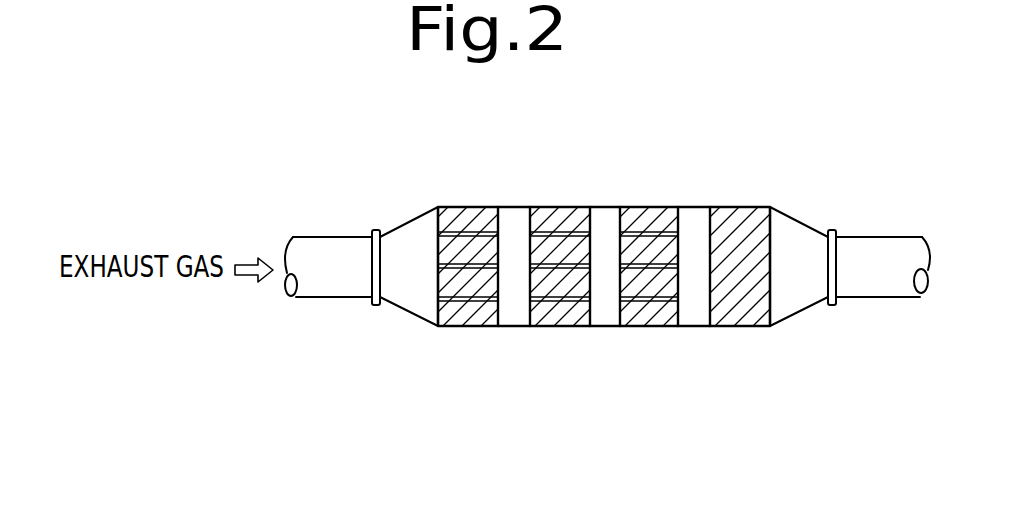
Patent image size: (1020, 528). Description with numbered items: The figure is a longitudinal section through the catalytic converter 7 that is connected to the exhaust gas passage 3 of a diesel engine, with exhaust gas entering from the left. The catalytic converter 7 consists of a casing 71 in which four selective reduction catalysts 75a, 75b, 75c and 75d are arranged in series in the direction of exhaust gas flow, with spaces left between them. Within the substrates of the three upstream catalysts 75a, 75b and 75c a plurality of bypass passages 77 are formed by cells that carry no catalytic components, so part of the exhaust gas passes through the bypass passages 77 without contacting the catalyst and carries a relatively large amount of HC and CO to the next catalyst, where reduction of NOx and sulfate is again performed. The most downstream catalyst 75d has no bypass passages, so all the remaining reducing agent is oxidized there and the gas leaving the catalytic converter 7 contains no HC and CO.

The exhaust gas passage 3 is at (337, 283).
The catalytic converter 7 is at (651, 288).
The casing 71 is at (797, 318).
The selective reduction catalyst 75a is at (463, 327).
The second selective reduction catalyst 75b is at (552, 327).
The third selective reduction catalyst 75c is at (667, 327).
The fourth selective reduction catalyst 75d is at (753, 218).
The bypass passages 77 is at (488, 233).